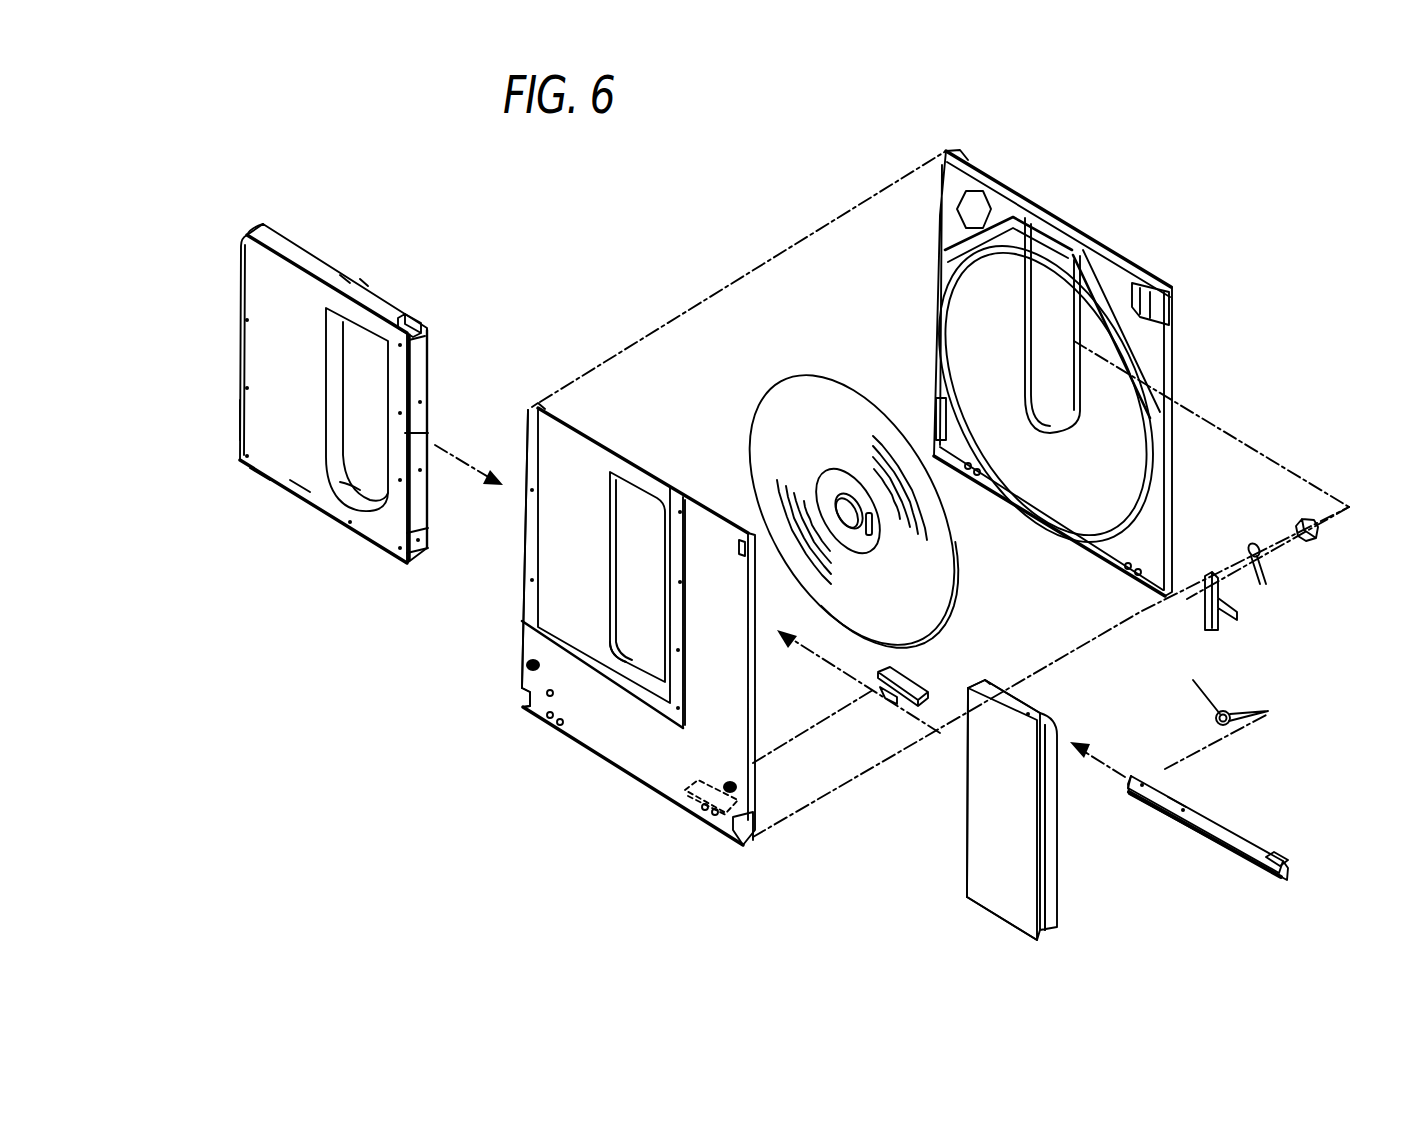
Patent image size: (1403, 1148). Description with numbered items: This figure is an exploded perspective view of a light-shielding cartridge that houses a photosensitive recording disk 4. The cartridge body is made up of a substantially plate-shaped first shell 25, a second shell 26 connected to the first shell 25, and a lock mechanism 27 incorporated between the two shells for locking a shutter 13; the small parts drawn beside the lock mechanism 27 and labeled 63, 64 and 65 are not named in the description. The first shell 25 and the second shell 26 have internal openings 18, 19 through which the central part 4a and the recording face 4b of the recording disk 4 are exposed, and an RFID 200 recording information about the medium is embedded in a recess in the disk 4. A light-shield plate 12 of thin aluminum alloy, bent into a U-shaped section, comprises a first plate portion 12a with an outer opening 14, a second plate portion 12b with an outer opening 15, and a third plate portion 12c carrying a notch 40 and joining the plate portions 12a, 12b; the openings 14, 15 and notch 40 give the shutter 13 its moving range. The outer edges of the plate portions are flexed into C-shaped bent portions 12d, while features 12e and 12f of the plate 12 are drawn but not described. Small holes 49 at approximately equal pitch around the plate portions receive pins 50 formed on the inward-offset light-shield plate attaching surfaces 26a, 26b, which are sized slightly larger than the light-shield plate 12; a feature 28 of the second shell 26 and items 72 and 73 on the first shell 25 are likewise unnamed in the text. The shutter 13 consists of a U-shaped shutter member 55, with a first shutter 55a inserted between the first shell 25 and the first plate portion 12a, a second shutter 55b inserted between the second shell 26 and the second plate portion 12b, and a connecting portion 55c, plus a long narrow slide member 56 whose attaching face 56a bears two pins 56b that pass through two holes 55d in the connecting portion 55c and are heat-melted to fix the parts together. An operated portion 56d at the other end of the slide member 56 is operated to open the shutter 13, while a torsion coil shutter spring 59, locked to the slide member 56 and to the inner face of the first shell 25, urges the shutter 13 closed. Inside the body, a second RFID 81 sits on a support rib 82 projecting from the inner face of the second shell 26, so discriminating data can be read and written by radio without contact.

The recording disk 4 is at (860, 489).
The central part 4a is at (852, 543).
The recording face 4b is at (850, 417).
The light-shield plate 12 is at (329, 362).
The first plate portion 12a is at (420, 366).
The second plate portion 12b is at (405, 433).
The third plate portion 12c is at (348, 280).
The bent portions 12d is at (240, 420).
The upper edge portion of lid 12e is at (363, 283).
The corner portion of lid 12f is at (260, 227).
The shutter 13 is at (965, 877).
The outer opening 14 is at (347, 352).
The outer opening 15 is at (345, 488).
The internal opening 18 is at (1030, 297).
The internal opening 19 is at (628, 652).
The first shell 25 is at (1045, 351).
The second shell 26 is at (634, 619).
The light-shield plate attaching surface 26a is at (680, 632).
The light-shield plate attaching surface 26b is at (553, 525).
The lock mechanism 27 is at (1293, 549).
The opening of panel 28 is at (618, 488).
The notch 40 is at (416, 318).
The small holes 49 is at (300, 490).
The pins 50 is at (530, 560).
The shutter member 55 is at (1030, 779).
The first shutter 55a is at (1048, 855).
The second shutter 55b is at (975, 817).
The connecting portion 55c is at (1013, 698).
The holes 55d is at (986, 685).
The slide member 56 is at (1247, 801).
The attaching face 56a is at (1178, 798).
The pins 56b is at (1140, 788).
The operated portion 56d is at (1290, 875).
The shutter spring 59 is at (1210, 700).
The lock piece 63 is at (1318, 535).
The lock lever 64 is at (1240, 620).
The pin 65 is at (1272, 580).
The bracket 72 is at (1140, 283).
The engagement slot 73 is at (720, 535).
The RFID 81 is at (892, 703).
The support rib 82 is at (688, 814).
The RFID 200 is at (873, 525).